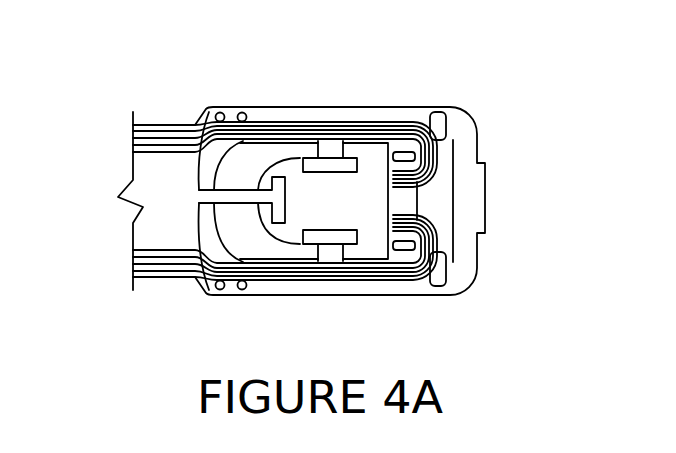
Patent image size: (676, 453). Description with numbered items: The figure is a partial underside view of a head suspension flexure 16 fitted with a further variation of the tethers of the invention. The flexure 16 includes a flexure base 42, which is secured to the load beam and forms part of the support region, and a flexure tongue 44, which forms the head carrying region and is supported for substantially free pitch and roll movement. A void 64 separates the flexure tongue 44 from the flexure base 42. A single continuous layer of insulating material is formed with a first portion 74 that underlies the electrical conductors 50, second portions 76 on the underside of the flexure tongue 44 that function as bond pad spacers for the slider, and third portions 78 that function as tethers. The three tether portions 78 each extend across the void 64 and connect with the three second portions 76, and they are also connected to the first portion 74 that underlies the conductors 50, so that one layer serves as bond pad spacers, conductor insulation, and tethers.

The head suspension flexure 16 is at (463, 142).
The flexure base 42 is at (250, 174).
The flexure tongue 44 is at (373, 176).
The electrical conductors 50 is at (408, 124).
The void 64 is at (208, 108).
The first portion of insulating material 74 is at (145, 232).
The second portions of insulating material 76 is at (355, 155).
The third portions of insulating material 78 is at (283, 145).